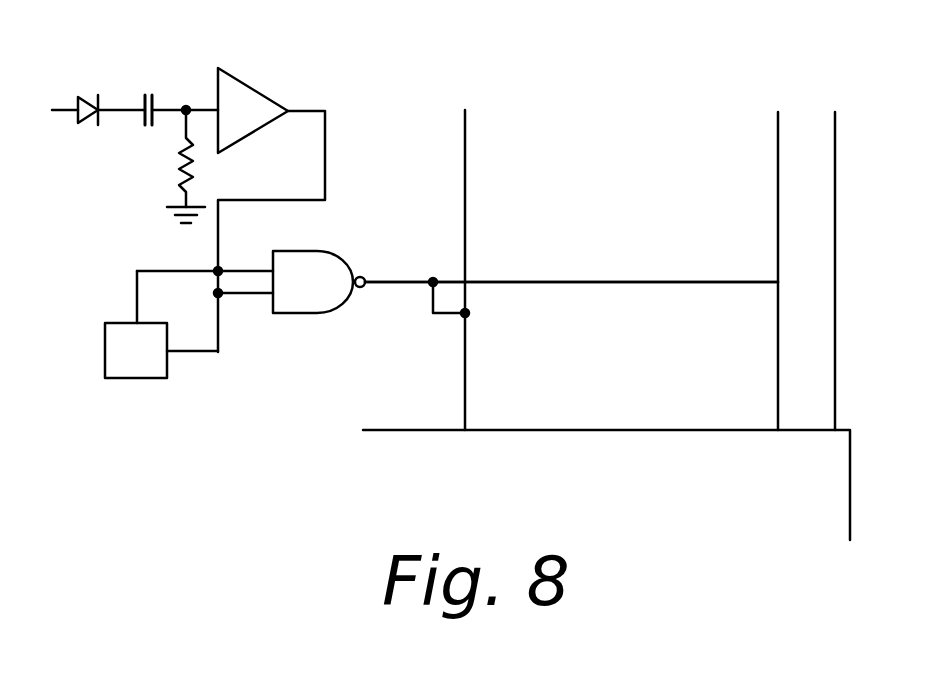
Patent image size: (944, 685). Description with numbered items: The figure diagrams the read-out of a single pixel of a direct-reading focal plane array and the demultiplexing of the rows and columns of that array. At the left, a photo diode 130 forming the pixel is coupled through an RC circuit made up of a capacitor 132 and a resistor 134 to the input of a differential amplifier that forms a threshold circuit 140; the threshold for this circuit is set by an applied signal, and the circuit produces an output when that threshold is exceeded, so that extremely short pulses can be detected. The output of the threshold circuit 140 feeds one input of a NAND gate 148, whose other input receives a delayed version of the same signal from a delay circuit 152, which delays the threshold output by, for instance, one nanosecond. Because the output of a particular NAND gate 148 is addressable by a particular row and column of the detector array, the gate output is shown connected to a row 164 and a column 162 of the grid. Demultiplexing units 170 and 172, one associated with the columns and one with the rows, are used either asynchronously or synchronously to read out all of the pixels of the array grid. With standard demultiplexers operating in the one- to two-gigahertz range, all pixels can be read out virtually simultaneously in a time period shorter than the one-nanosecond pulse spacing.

The diode 130 is at (90, 125).
The capacitor 132 is at (148, 92).
The resistor 134 is at (178, 170).
The threshold circuit 140 is at (262, 95).
The NAND gate 148 is at (338, 253).
The delay circuit 152 is at (131, 378).
The rows 162 is at (466, 381).
The columns 164 is at (646, 282).
The demultiplexing unit 170 is at (667, 473).
The demultiplexing unit 172 is at (813, 189).